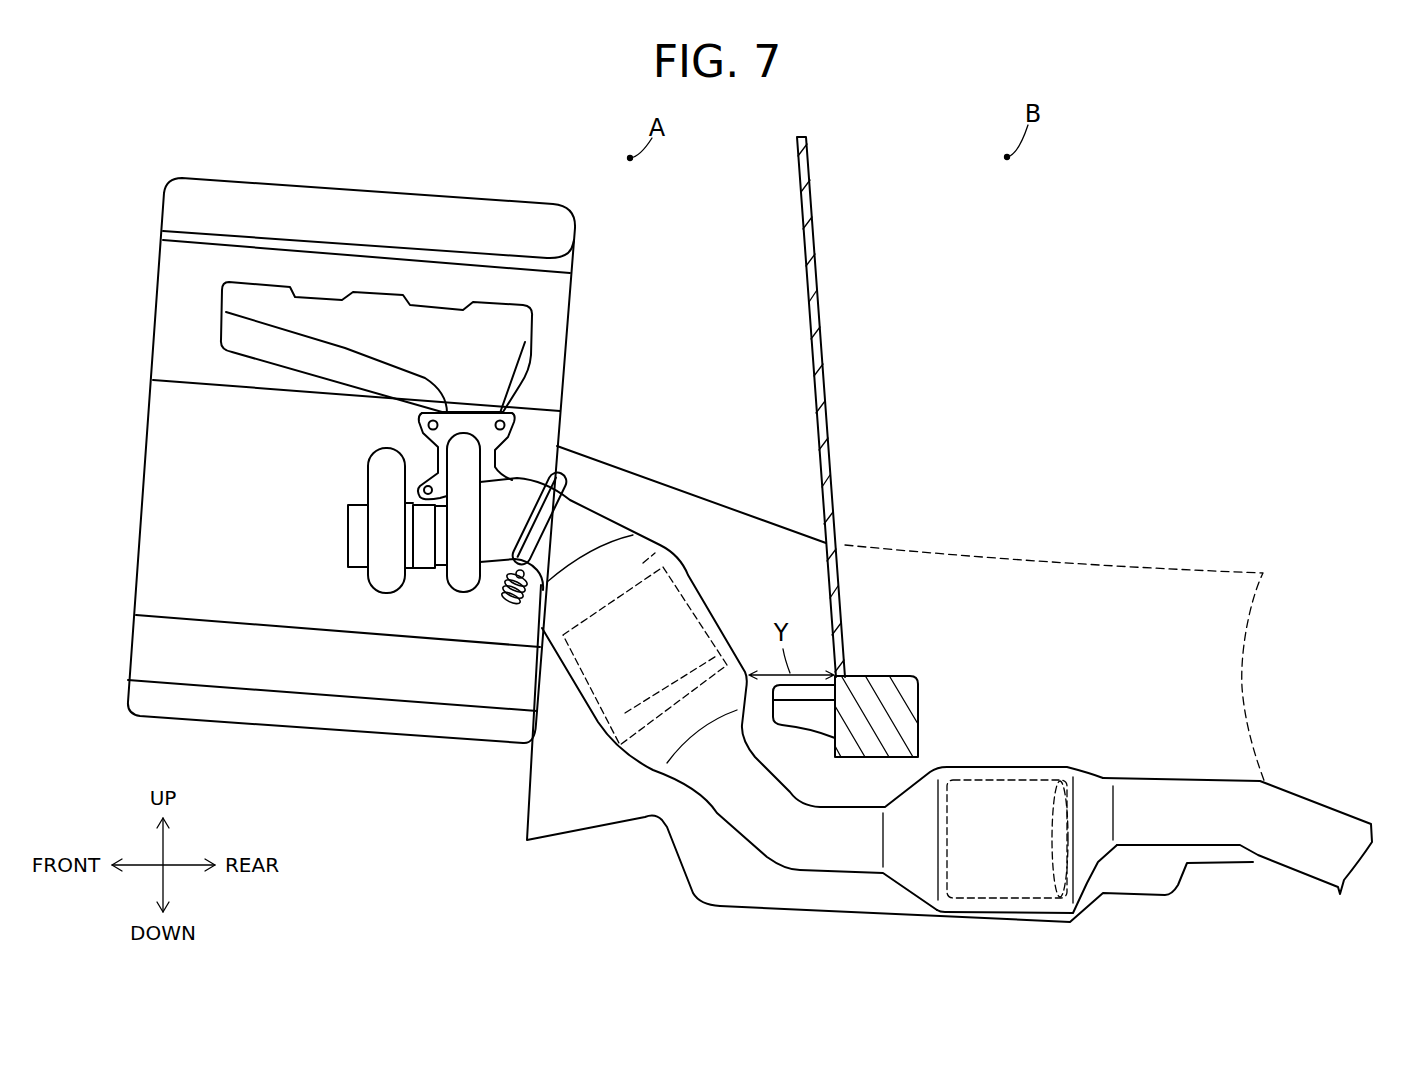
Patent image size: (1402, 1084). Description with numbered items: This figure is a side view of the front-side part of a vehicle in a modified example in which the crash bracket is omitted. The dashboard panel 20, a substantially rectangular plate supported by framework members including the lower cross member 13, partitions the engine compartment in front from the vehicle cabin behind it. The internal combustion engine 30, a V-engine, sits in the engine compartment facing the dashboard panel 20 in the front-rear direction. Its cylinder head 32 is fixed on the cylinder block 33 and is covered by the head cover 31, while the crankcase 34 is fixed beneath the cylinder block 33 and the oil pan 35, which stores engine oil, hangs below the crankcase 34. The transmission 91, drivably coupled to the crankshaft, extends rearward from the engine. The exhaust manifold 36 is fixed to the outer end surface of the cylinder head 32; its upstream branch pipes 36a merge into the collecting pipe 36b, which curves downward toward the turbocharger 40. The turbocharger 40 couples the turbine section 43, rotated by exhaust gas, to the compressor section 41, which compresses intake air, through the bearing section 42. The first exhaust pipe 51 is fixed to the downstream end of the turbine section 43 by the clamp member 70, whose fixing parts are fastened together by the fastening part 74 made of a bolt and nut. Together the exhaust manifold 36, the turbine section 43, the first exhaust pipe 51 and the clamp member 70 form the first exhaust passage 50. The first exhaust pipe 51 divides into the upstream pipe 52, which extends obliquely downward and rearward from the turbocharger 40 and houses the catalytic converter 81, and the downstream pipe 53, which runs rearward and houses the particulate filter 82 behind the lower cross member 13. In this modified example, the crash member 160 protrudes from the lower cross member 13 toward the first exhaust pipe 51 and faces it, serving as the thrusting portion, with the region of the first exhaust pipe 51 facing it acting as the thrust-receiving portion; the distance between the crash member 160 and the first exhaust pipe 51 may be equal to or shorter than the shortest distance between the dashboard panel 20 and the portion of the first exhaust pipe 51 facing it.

The lower cross member 13 is at (920, 693).
The dashboard panel 20 is at (812, 223).
The internal combustion engine 30 is at (380, 194).
The head cover 31 is at (574, 228).
The cylinder head 32 is at (567, 333).
The cylinder block 33 is at (145, 441).
The crankcase 34 is at (133, 627).
The oil pan 35 is at (127, 694).
The exhaust manifold 36 is at (215, 297).
The branch pipes 36a is at (245, 282).
The collecting pipe 36b is at (340, 378).
The turbocharger 40 is at (412, 628).
The compressor section 41 is at (373, 592).
The bearing section 42 is at (427, 572).
The turbine section 43 is at (460, 594).
The first exhaust passage 50 is at (252, 517).
The first exhaust pipe 51 is at (1140, 780).
The upstream pipe 52 is at (703, 805).
The downstream pipe 53 is at (857, 877).
The clamp member 70 is at (572, 480).
The fastening part 74 is at (505, 607).
The catalytic converter 81 is at (645, 560).
The particulate filter 82 is at (1010, 777).
The transmission 91 is at (652, 478).
The crash member 160 is at (791, 728).